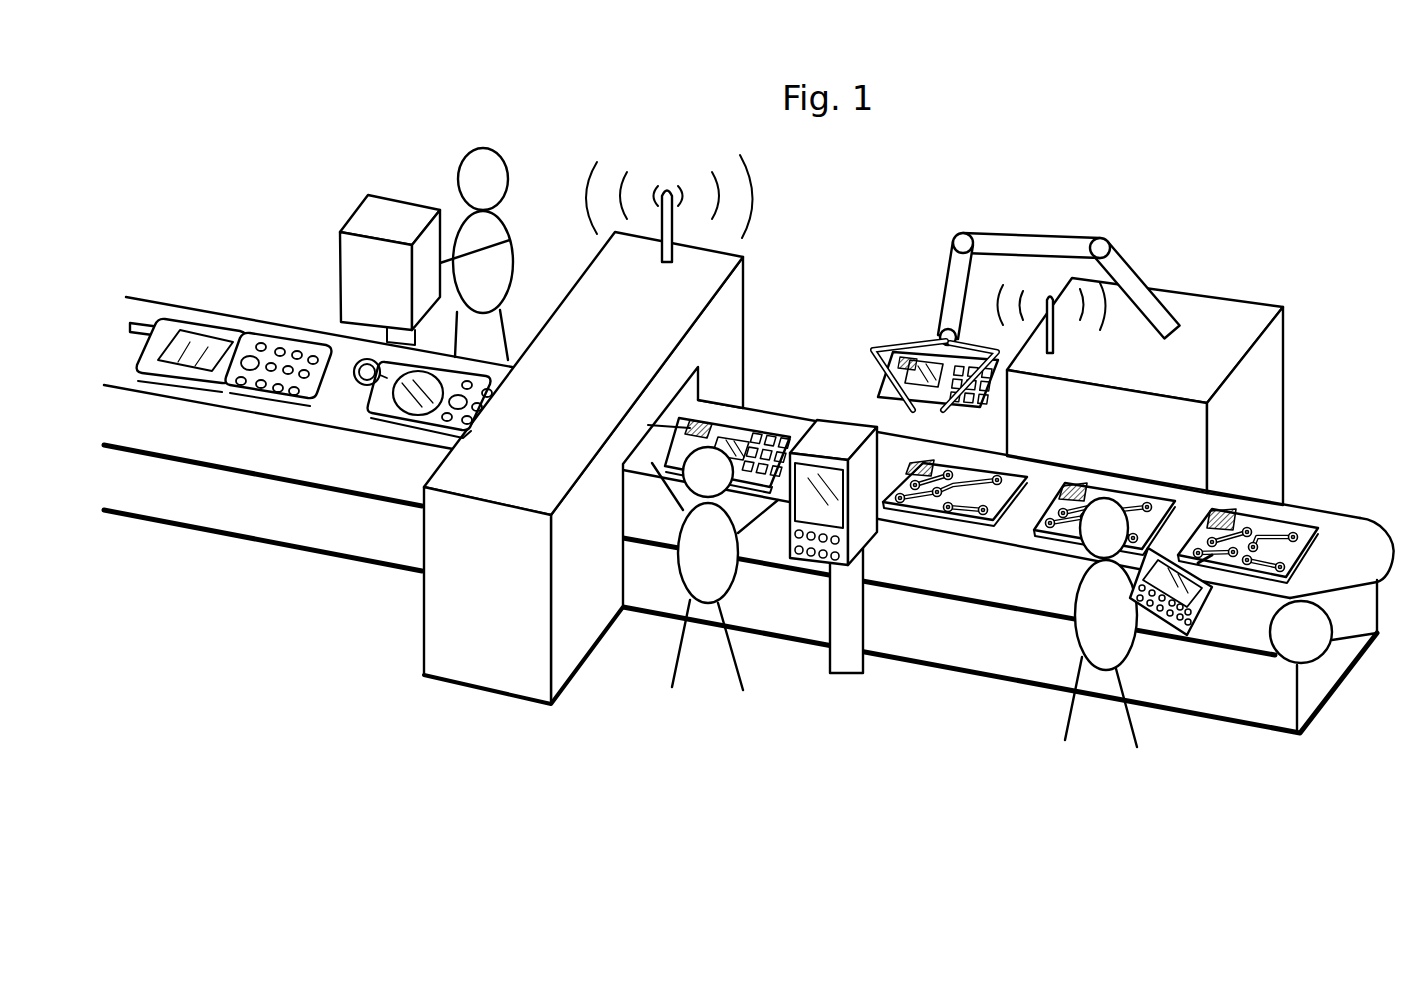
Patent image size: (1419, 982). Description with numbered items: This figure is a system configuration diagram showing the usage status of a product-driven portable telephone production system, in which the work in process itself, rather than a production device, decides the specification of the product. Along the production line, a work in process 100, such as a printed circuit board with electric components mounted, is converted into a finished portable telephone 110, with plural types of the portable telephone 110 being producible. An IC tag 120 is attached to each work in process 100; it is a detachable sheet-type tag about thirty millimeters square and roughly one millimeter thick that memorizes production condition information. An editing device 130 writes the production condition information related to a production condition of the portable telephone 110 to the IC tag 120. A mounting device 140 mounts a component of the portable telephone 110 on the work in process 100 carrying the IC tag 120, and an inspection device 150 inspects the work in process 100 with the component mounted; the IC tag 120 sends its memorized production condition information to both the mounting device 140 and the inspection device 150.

The work in process 100 is at (1010, 503).
The portable telephone 110 is at (392, 424).
The IC tag 120 is at (922, 460).
The editing device 130 is at (1190, 636).
The mounting device 140 is at (1045, 443).
The inspection device 150 is at (578, 300).